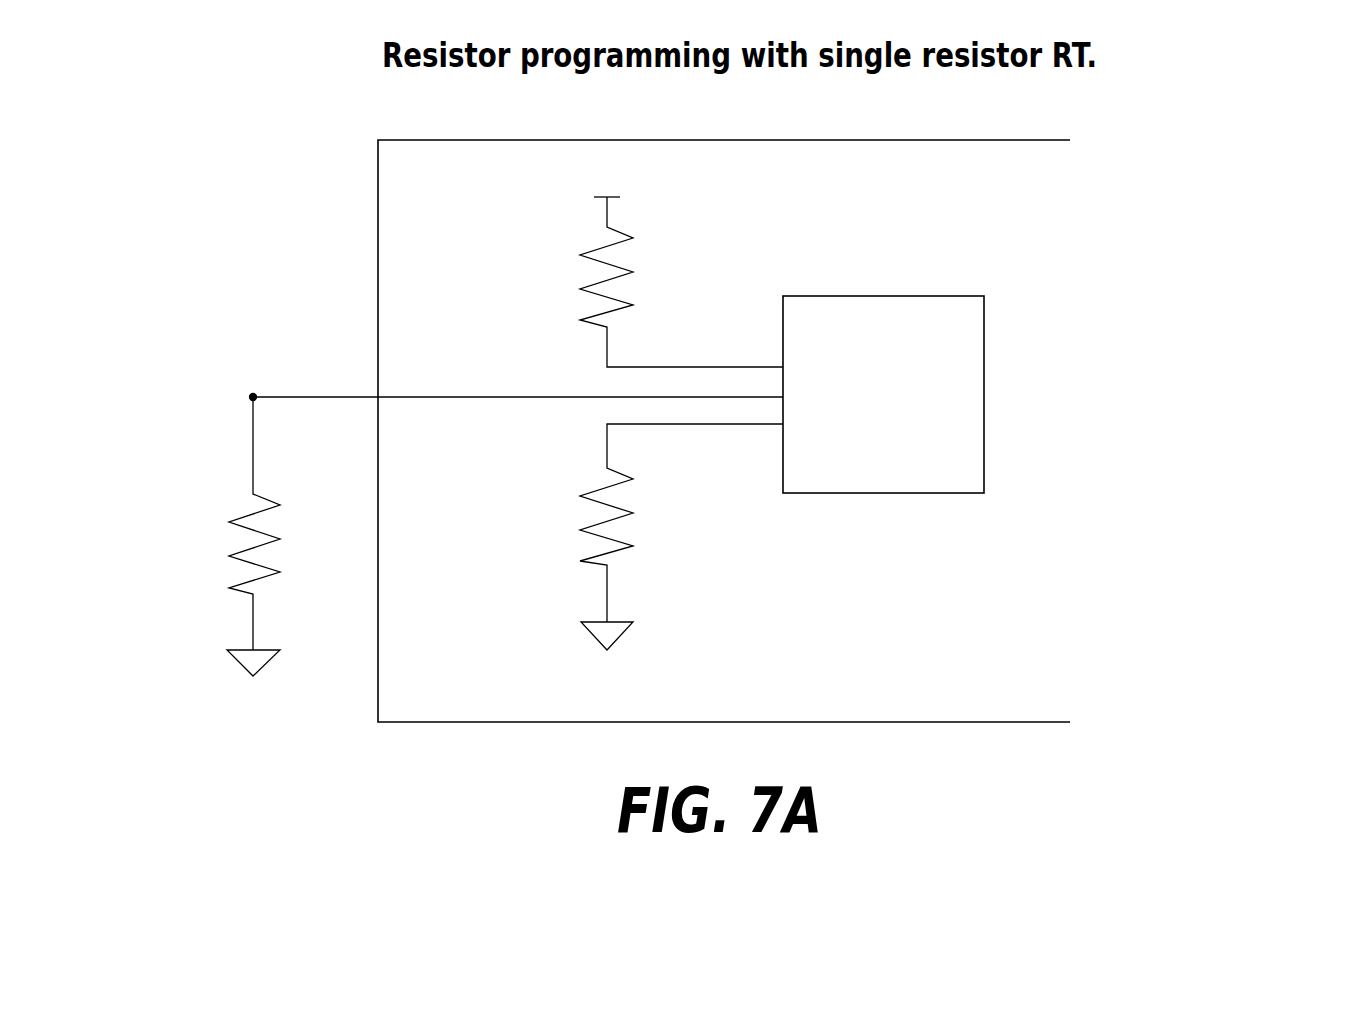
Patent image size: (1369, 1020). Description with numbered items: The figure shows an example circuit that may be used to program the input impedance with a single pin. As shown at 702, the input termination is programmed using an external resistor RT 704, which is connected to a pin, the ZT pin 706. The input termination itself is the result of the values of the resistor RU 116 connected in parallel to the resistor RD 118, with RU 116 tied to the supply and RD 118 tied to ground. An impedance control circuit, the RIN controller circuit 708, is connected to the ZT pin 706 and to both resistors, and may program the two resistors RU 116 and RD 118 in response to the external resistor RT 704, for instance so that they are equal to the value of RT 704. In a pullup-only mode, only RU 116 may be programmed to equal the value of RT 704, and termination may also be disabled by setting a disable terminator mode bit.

The input termination programming arrangement 702 is at (1192, 153).
The external resistor RT 704 is at (165, 542).
The ZT pin 706 is at (231, 328).
The RIN controller circuit 708 is at (984, 366).
The resistor RU 116 is at (680, 250).
The resistor RD 118 is at (700, 527).